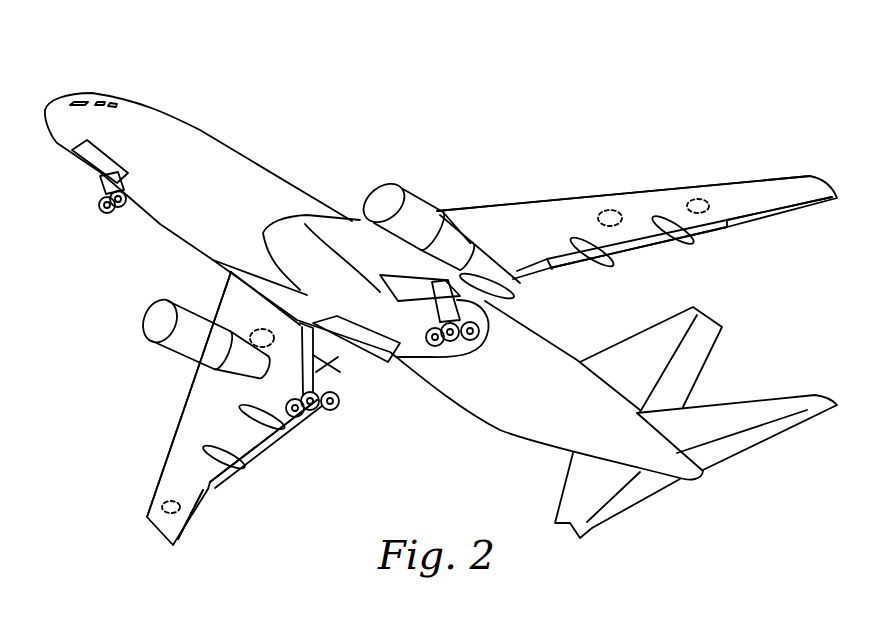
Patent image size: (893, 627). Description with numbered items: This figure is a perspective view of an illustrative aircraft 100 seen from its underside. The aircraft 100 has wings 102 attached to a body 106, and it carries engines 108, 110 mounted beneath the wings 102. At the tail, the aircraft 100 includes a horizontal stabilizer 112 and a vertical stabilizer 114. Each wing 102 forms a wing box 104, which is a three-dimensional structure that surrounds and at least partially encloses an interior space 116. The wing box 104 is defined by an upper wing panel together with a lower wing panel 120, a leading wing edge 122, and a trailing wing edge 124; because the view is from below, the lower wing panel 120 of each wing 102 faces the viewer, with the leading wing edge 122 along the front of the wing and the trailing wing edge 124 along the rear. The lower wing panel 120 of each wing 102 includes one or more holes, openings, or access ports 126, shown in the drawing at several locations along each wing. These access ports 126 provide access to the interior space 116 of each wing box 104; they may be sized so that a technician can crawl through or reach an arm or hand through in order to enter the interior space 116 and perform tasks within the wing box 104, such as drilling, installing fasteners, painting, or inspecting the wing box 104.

The aircraft 100 is at (285, 79).
The wings 102 is at (623, 192).
The wing box 104 is at (541, 193).
The body 106 is at (272, 188).
The engine 108 is at (413, 187).
The engine 110 is at (150, 316).
The horizontal stabilizer 112 is at (823, 397).
The vertical stabilizer 114 is at (697, 312).
The interior space 116 is at (768, 193).
The lower wing panel 120 is at (541, 240).
The leading wing edge 122 is at (487, 203).
The trailing wing edge 124 is at (647, 250).
The access ports 126 is at (602, 210).